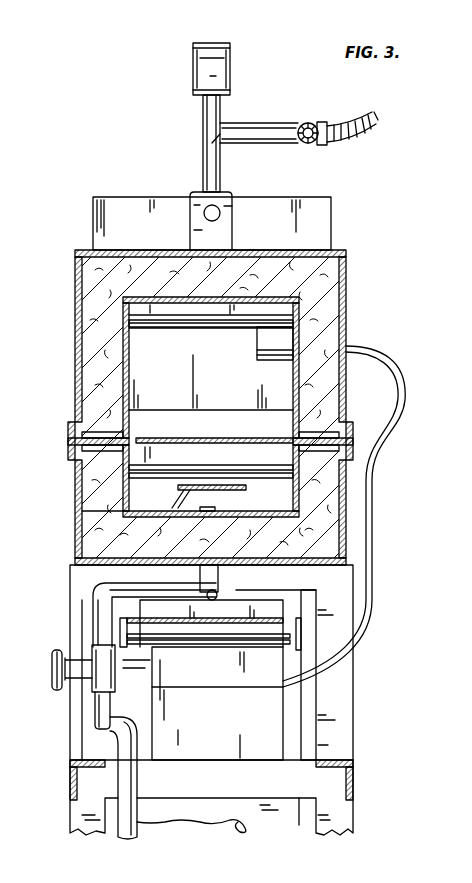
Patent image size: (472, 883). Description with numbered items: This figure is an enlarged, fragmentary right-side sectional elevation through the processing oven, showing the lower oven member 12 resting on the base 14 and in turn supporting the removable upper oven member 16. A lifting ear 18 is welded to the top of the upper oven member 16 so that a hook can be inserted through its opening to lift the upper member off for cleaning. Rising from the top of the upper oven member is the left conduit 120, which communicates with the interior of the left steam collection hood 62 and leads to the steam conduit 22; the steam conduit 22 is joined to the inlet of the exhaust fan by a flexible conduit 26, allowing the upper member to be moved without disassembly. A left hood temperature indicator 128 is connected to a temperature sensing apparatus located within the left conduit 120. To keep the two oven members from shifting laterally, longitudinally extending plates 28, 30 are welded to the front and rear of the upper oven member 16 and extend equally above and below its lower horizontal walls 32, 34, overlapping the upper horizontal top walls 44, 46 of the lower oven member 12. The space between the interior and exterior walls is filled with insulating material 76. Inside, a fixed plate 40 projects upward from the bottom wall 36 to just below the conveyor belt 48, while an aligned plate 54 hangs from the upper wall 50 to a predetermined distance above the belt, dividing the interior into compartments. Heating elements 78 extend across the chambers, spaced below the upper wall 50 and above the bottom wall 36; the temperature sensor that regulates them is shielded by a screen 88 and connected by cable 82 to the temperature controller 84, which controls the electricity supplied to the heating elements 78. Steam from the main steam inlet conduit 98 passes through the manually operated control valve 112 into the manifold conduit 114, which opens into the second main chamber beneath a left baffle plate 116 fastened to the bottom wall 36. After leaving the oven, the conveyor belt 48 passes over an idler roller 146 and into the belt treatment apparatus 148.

The lower oven member 12 is at (68, 499).
The base 14 is at (342, 826).
The upper oven member 16 is at (68, 304).
The lifting ear 18 is at (236, 233).
The steam conduit 22 is at (307, 124).
The flexible conduit 26 is at (360, 136).
The longitudinally extending plate 28 is at (66, 443).
The longitudinally extending plate 30 is at (343, 436).
The lower horizontal longitudinally extending wall 32 is at (82, 417).
The lower horizontal longitudinally extending wall 34 is at (334, 418).
The bottom wall 36 is at (238, 518).
The fixed plate 40 is at (116, 505).
The upper horizontal longitudinally extending top wall 44 is at (82, 468).
The upper horizontal longitudinally extending top wall 46 is at (332, 464).
The conveyor belt 48 is at (220, 448).
The upper wall 50 is at (197, 309).
The plate 54 is at (112, 355).
The left steam collection hood 62 is at (108, 200).
The insulating material 76 is at (330, 300).
The heating element 78 is at (141, 326).
The cable 82 is at (378, 583).
The temperature controller 84 is at (147, 725).
The screen 88 is at (257, 352).
The main steam inlet conduit 98 is at (134, 838).
The manually operated control valve 112 is at (56, 668).
The manifold conduit 114 is at (243, 594).
The left baffle plate 116 is at (183, 491).
The left conduit 120 is at (204, 158).
The left hood temperature indicator 128 is at (205, 67).
The idler roller 146 is at (253, 642).
The belt treatment apparatus 148 is at (238, 830).